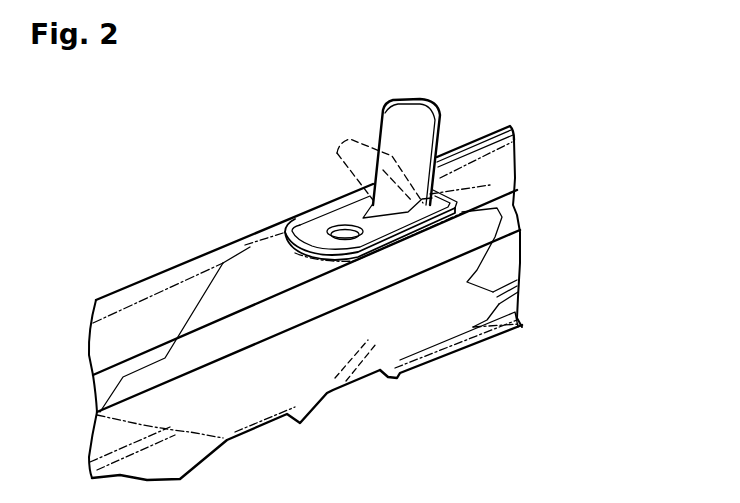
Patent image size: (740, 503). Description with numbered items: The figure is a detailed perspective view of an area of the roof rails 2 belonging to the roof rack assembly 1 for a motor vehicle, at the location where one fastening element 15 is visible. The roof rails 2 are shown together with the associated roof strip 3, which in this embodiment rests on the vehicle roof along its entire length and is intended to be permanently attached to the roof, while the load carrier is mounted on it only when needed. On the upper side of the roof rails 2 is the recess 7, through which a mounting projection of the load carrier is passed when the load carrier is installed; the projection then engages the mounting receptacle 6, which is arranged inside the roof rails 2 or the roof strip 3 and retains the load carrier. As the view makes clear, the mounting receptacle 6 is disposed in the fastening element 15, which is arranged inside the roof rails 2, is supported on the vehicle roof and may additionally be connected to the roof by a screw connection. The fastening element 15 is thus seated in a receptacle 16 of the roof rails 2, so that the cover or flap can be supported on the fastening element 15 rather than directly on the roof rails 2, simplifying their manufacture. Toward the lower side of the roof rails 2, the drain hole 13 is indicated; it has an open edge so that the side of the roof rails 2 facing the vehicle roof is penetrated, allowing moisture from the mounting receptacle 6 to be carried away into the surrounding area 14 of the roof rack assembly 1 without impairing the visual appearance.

The roof rack assembly 1 is at (524, 92).
The roof rails 2 is at (557, 137).
The roof strip 3 is at (490, 185).
The mounting receptacle 6 is at (338, 223).
The recess 7 is at (305, 230).
The drain hole 13 is at (343, 393).
The surrounding area 14 is at (382, 439).
The fastening element 15 is at (417, 332).
The receptacle 16 is at (470, 263).